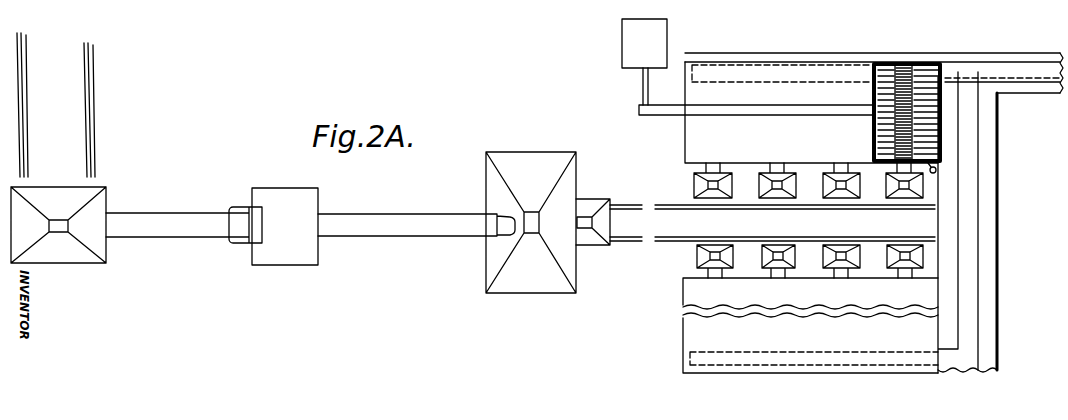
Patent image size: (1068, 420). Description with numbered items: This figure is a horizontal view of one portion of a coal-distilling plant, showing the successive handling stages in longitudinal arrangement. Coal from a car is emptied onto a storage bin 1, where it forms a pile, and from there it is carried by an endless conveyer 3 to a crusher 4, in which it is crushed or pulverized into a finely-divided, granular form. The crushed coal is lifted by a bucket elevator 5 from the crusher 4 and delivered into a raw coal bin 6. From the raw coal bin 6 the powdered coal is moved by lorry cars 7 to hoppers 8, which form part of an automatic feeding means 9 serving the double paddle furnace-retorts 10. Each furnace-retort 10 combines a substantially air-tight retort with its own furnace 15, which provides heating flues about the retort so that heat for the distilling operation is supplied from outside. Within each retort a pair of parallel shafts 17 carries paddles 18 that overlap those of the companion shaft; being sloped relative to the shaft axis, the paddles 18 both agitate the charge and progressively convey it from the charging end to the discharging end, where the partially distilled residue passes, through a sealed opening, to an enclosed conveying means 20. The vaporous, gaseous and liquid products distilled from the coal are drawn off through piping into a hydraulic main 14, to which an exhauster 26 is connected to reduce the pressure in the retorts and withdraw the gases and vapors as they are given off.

The storage bin 1 is at (81, 260).
The endless conveyer 3 is at (177, 212).
The crusher 4 is at (285, 226).
The bucket elevator 5 is at (391, 229).
The raw coal bin 6 is at (531, 222).
The lorry cars 7 is at (595, 248).
The hoppers 8 is at (758, 245).
The automatic feeding means 9 is at (770, 168).
The double paddle furnace-retorts 10 is at (810, 217).
The hydraulic main 14 is at (640, 104).
The furnace 15 is at (937, 124).
The parallel shafts 17 is at (913, 72).
The paddles 18 is at (928, 148).
The enclosed conveying means 20 is at (773, 58).
The exhauster 26 is at (622, 33).